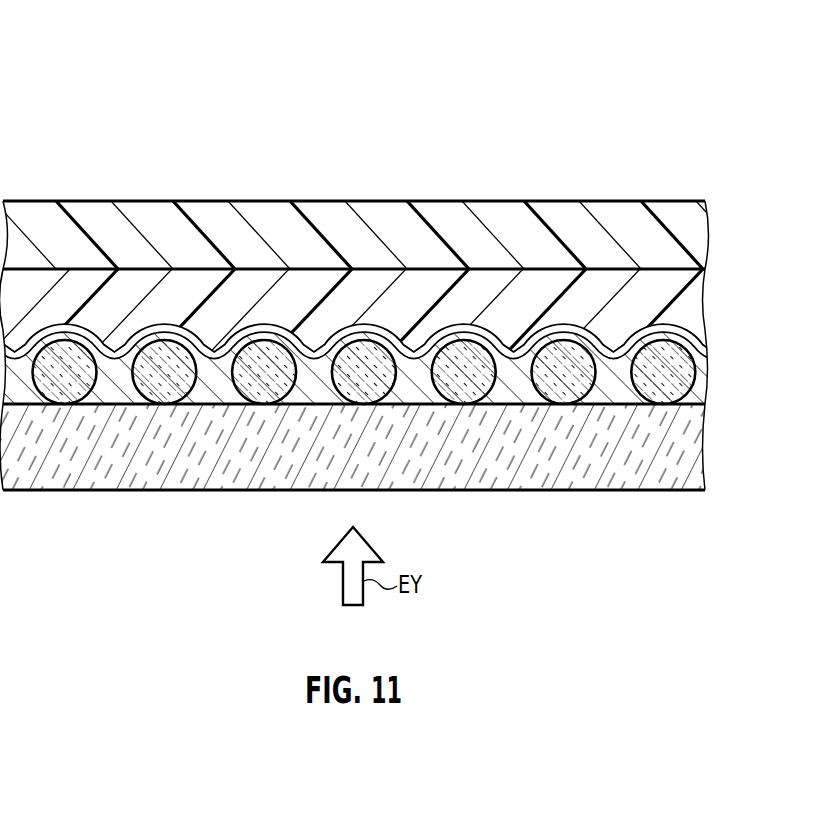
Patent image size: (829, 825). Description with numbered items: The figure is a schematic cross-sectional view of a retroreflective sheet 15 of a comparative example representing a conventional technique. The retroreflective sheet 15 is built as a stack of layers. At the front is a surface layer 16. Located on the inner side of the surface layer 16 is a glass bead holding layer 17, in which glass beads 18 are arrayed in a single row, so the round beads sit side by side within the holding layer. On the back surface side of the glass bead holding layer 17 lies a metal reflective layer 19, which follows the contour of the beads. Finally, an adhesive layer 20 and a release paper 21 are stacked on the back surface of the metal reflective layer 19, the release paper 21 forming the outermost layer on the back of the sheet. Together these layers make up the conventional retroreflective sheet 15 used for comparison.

The retroreflective sheet 15 is at (97, 112).
The surface layer 16 is at (683, 450).
The glass bead holding layer 17 is at (697, 393).
The glass beads 18 is at (690, 370).
The metal reflective layer 19 is at (692, 317).
The adhesive layer 20 is at (675, 297).
The release paper 21 is at (677, 233).